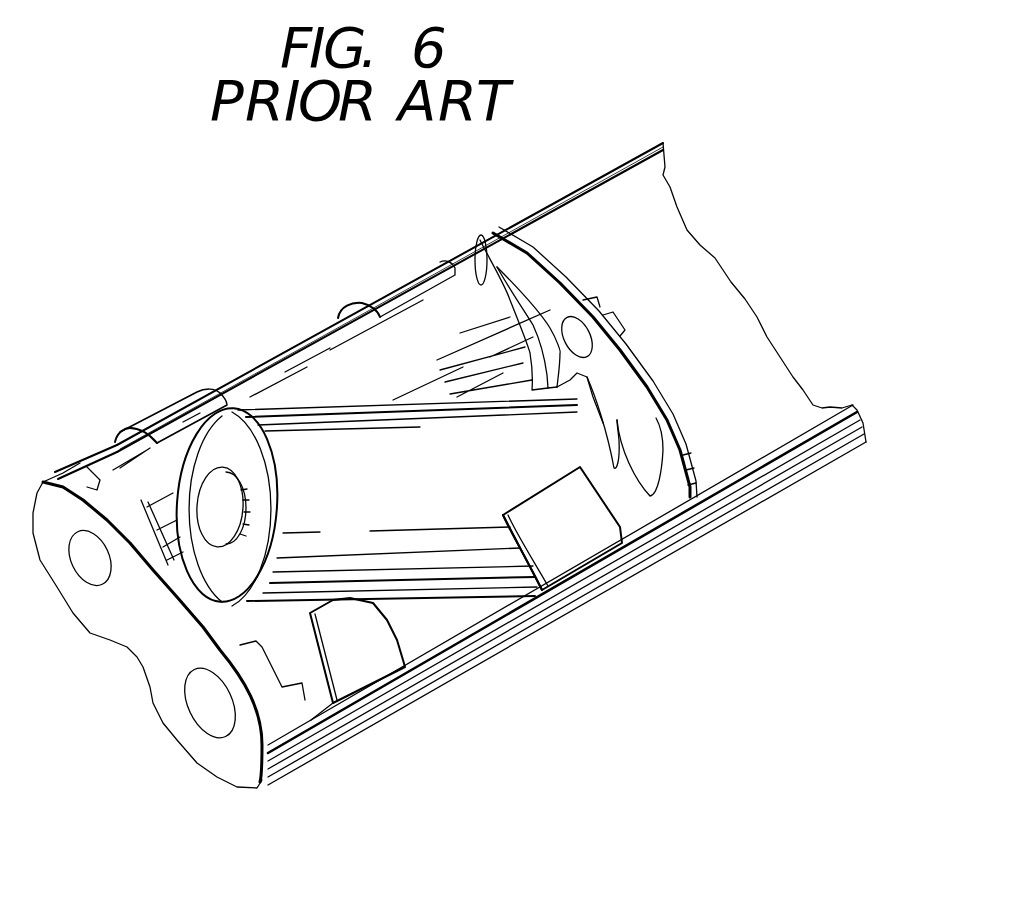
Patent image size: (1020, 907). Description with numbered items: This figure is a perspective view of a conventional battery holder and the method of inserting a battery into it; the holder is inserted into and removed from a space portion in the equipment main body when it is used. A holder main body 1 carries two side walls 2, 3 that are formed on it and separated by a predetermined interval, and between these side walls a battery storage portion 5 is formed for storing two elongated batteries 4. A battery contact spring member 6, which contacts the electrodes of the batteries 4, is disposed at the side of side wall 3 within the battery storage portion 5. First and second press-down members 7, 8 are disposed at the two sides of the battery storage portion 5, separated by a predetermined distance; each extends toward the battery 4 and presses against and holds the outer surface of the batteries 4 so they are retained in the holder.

The holder main body 1 is at (703, 554).
The side wall 2 is at (157, 660).
The side wall 3 is at (570, 288).
The elongated battery 4 is at (292, 363).
The battery storage portion 5 is at (446, 350).
The battery contact spring member 6 is at (478, 250).
The first press-down member 7 is at (390, 300).
The second press-down member 8 is at (168, 420).